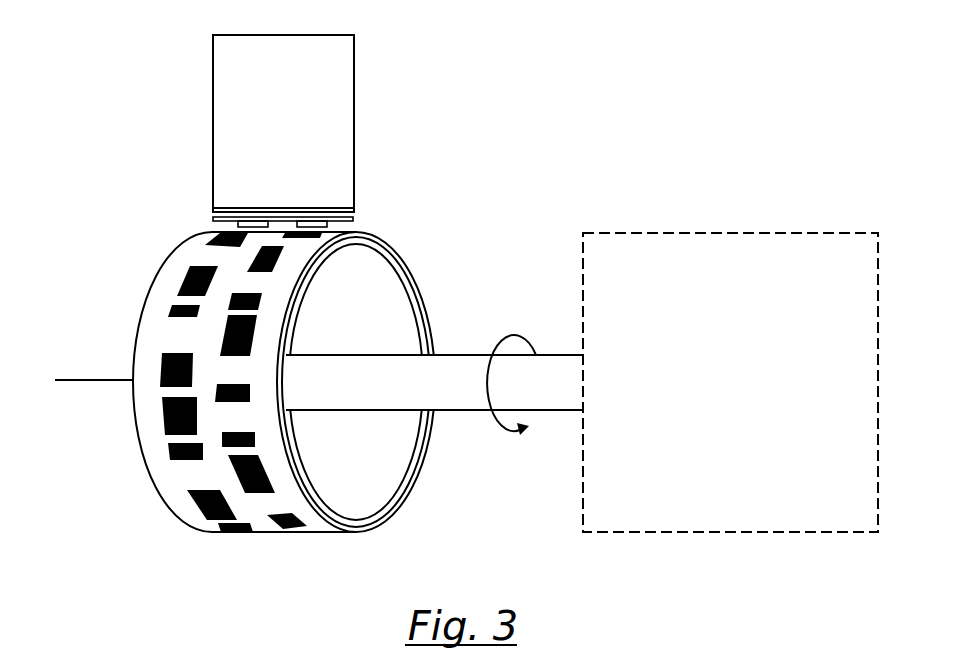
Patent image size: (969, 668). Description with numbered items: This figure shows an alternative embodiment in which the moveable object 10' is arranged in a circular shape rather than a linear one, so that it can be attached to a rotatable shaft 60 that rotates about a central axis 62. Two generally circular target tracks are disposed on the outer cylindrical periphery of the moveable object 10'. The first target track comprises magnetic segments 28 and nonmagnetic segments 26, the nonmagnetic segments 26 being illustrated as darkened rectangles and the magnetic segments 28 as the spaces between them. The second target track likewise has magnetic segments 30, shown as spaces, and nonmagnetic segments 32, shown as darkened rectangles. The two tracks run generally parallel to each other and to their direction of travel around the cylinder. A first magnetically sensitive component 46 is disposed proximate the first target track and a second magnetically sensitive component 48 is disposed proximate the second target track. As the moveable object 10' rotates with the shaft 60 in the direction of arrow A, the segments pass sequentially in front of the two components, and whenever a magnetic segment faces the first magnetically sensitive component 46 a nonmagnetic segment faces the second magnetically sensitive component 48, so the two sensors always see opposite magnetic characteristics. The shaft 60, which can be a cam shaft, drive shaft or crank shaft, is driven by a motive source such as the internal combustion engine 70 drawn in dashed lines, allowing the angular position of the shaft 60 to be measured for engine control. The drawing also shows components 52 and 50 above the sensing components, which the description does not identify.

The permanent magnet 52 is at (347, 87).
The magnet pole plate 50 is at (350, 212).
The first magnetically sensitive component 46 is at (353, 220).
The second magnetically sensitive component 48 is at (217, 220).
The central axis 62 is at (98, 380).
The magnetic segments of second target track 30 is at (190, 477).
The nonmagnetic segments of second target track 32 is at (202, 510).
The nonmagnetic segments of first target track 26 is at (258, 495).
The moveable object 10' is at (387, 382).
The magnetic segments of first target track 28 is at (323, 533).
The rotatable shaft 60 is at (468, 402).
The arrow A is at (510, 333).
The internal combustion engine 70 is at (658, 532).